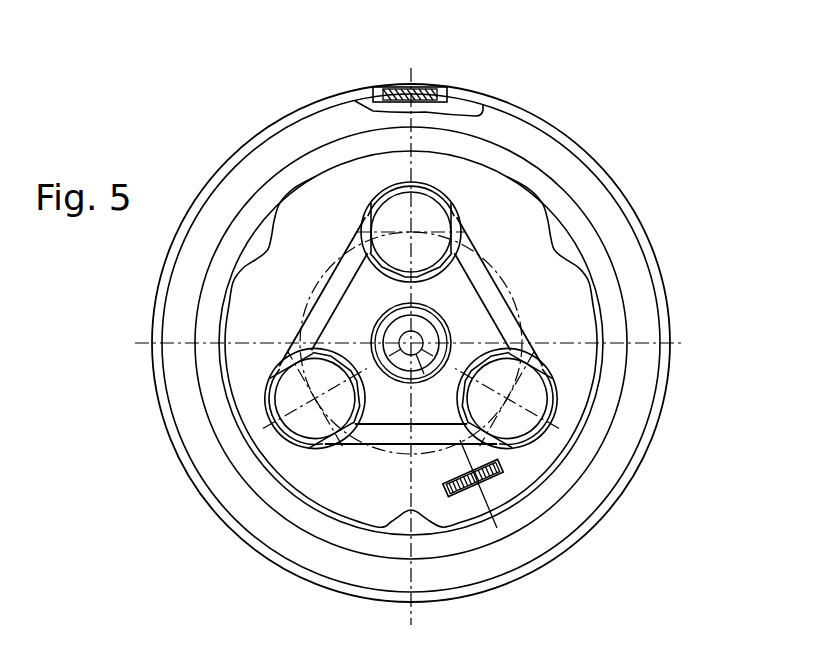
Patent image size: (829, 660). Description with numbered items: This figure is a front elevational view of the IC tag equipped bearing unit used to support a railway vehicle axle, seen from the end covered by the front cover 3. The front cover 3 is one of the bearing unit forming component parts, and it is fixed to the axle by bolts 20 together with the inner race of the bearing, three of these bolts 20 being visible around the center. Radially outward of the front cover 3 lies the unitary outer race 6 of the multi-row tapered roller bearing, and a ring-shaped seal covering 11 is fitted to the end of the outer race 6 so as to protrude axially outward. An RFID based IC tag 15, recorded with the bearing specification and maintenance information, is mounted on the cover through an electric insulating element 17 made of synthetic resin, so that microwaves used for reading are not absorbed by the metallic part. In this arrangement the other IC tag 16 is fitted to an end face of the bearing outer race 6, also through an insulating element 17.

The front cover 3 is at (264, 168).
The outer race 6 is at (312, 107).
The seal covering 11 is at (457, 112).
The IC tag 15 is at (500, 488).
The other IC tag 16 is at (425, 87).
The electric insulating element 17 is at (379, 87).
The bolts 20 is at (424, 210).